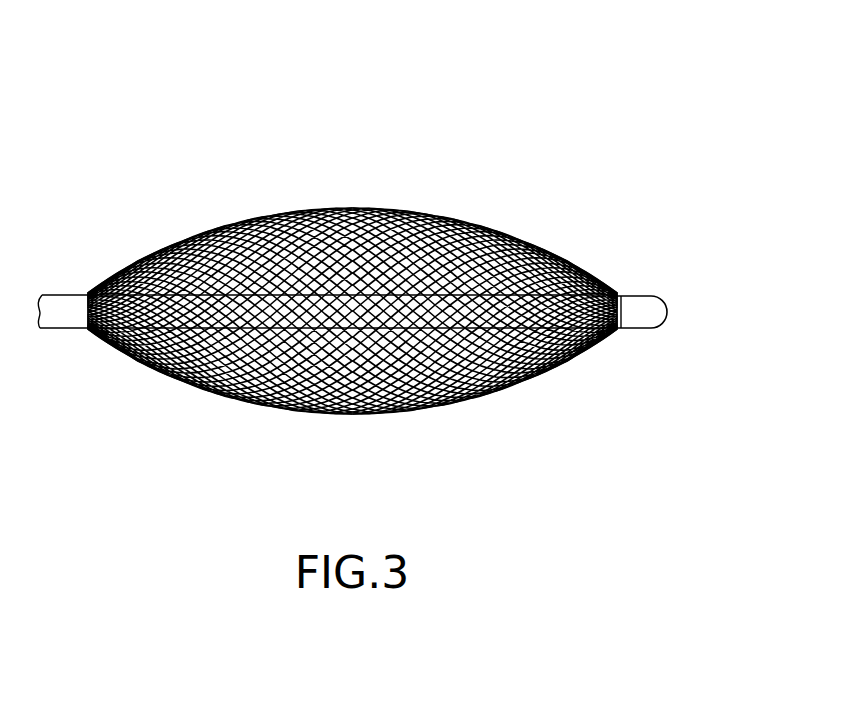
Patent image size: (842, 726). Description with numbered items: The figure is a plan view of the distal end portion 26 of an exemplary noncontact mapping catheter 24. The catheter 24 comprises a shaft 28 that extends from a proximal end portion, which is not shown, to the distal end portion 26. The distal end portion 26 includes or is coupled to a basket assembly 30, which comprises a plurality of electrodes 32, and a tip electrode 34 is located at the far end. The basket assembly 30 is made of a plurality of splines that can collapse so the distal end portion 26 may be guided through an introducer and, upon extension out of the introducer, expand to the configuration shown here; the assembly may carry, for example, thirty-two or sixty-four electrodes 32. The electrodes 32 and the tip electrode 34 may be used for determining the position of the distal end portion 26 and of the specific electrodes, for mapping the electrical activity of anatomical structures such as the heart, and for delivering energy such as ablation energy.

The noncontact mapping catheter 24 is at (361, 86).
The distal end portion 26 is at (624, 159).
The shaft 28 is at (45, 294).
The basket assembly 30 is at (412, 195).
The electrodes 32 is at (352, 268).
The tip electrode 34 is at (638, 296).